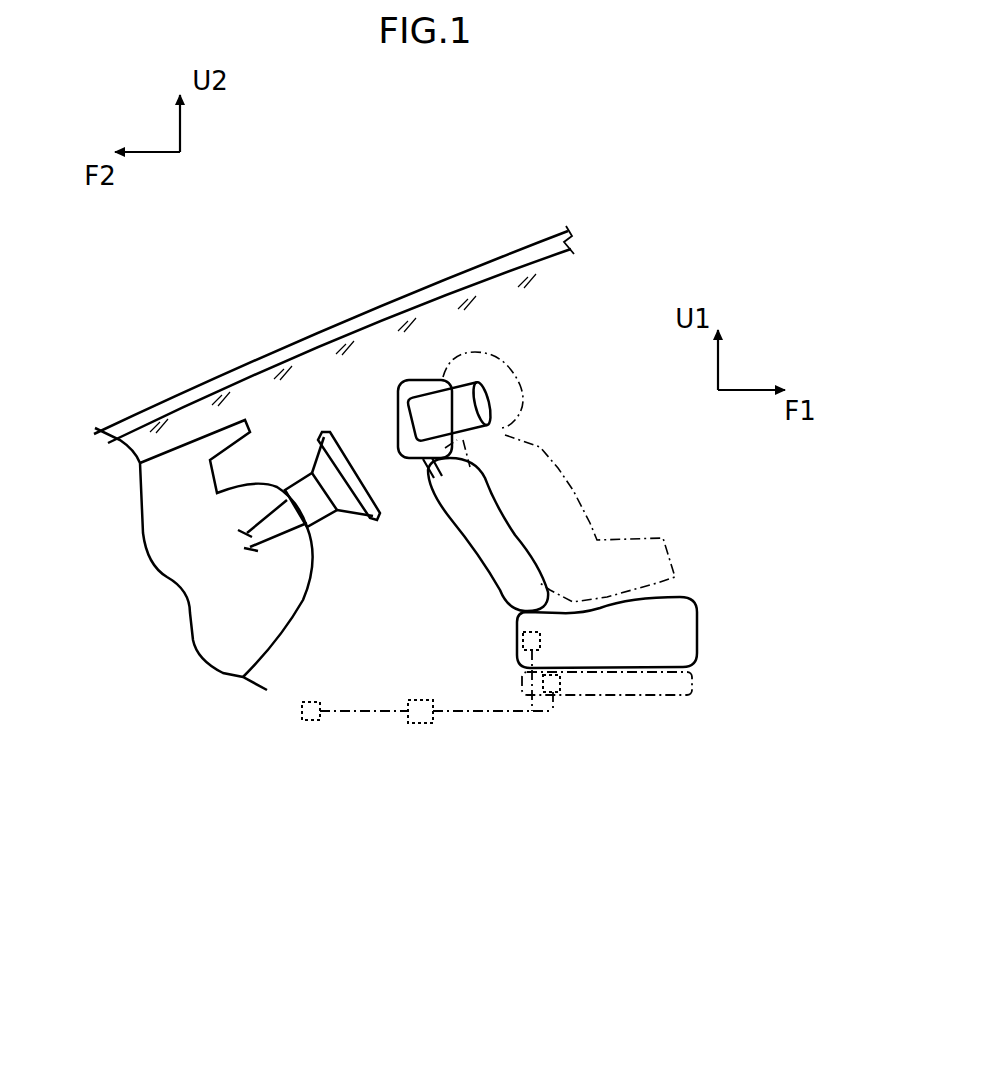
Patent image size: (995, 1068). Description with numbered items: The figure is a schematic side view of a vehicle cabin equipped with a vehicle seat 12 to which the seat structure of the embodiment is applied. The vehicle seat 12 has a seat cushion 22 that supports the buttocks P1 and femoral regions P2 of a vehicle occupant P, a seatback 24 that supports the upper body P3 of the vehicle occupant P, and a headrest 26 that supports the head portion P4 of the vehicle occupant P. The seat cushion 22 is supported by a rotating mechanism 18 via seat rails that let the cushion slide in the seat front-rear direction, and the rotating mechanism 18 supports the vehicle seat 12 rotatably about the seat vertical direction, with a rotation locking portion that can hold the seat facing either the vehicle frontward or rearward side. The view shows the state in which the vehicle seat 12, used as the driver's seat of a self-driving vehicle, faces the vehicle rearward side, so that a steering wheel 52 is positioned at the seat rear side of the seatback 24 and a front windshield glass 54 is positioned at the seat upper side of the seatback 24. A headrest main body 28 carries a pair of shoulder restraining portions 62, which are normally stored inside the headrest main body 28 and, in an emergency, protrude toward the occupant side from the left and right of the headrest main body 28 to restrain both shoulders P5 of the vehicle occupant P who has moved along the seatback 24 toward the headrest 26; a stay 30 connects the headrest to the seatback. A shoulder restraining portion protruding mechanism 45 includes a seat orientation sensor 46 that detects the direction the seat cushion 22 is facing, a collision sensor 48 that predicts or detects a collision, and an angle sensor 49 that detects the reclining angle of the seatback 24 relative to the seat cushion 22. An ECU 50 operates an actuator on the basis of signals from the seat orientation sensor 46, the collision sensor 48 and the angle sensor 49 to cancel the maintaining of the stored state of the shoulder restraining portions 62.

The vehicle seat 12 is at (474, 574).
The rotating mechanism 18 is at (677, 697).
The seat cushion 22 is at (700, 623).
The seatback 24 is at (455, 528).
The headrest 26 is at (403, 386).
The headrest main body 28 is at (398, 413).
The headrest stay 30 is at (423, 462).
The shoulder restraining portion protruding mechanism 45 is at (497, 822).
The seat orientation sensor 46 is at (560, 685).
The collision sensor 48 is at (310, 723).
The angle sensor 49 is at (523, 641).
The ECU 50 is at (423, 725).
The steering wheel 52 is at (323, 432).
The front windshield glass 54 is at (328, 318).
The shoulder restraining portion 62 is at (471, 385).
The vehicle occupant P is at (580, 490).
The buttocks P1 is at (588, 600).
The femoral regions P2 is at (645, 538).
The upper body P3 is at (560, 470).
The head portion P4 is at (470, 350).
The shoulders P5 is at (505, 435).